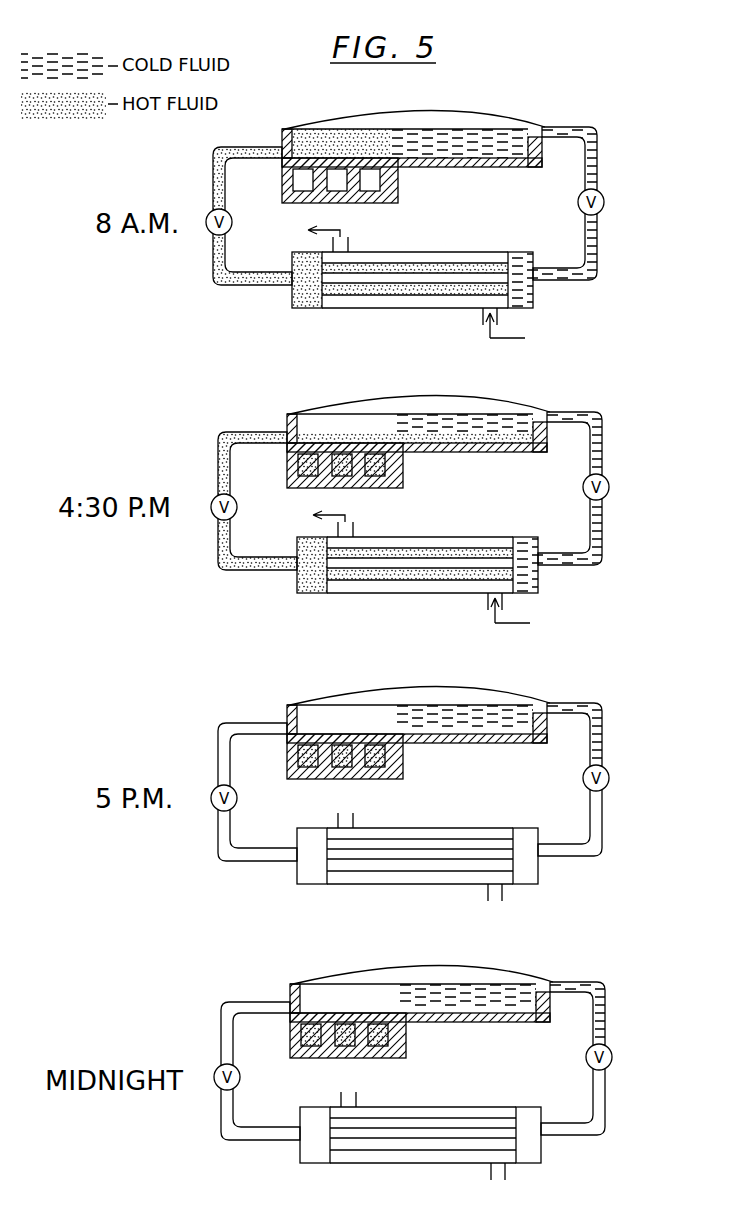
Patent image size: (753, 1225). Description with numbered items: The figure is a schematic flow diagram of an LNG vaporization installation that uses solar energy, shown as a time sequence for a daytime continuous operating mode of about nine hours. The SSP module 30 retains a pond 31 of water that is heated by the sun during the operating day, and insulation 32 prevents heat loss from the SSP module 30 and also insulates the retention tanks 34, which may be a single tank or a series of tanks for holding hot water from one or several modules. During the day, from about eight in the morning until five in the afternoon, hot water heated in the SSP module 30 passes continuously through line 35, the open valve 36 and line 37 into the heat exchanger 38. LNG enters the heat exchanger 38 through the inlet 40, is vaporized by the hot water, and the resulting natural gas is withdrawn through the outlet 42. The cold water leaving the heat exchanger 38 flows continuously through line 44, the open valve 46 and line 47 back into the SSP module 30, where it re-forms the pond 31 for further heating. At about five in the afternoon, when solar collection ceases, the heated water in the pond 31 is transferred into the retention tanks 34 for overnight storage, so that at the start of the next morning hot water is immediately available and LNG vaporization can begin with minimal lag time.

The SSP module 30 is at (462, 112).
The pond 31 is at (339, 140).
The insulation 32 is at (441, 168).
The retention tanks 34 is at (303, 186).
The line 35 is at (212, 166).
The valve 36 is at (208, 232).
The line 37 is at (232, 290).
The heat exchanger 38 is at (362, 310).
The inlet 40 is at (483, 314).
The outlet 42 is at (349, 247).
The line 44 is at (600, 274).
The valve 46 is at (605, 204).
The line 47 is at (597, 145).